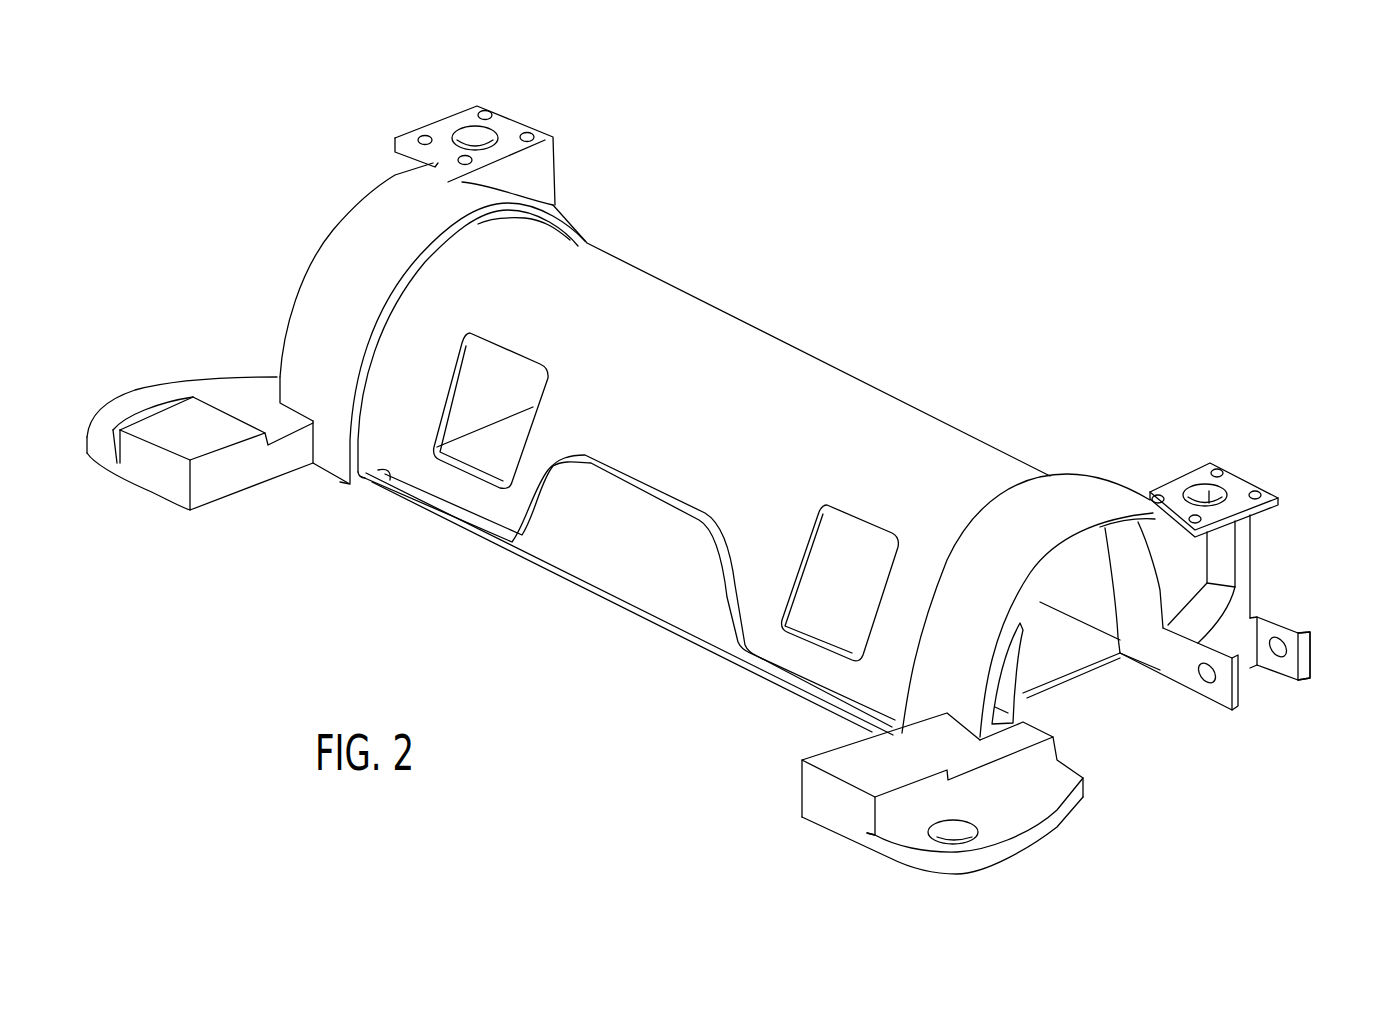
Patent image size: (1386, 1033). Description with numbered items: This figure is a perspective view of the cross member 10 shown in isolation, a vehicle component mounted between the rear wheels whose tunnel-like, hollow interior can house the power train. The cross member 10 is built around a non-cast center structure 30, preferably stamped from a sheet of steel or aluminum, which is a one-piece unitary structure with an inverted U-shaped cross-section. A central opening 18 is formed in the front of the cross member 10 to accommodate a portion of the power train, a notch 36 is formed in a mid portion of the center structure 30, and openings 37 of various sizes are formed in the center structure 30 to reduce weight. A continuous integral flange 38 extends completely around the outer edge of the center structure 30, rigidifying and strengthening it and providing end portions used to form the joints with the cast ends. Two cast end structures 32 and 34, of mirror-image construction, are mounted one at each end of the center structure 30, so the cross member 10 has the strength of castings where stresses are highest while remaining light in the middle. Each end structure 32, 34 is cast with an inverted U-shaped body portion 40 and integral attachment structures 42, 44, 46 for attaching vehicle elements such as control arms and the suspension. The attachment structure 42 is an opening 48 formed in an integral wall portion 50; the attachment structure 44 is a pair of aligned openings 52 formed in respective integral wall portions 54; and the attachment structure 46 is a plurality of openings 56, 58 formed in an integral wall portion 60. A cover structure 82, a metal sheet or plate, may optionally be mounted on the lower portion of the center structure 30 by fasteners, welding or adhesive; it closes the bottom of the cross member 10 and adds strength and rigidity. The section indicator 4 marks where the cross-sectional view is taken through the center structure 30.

The section line 4- 4 is at (433, 220).
The cross member 10 is at (889, 346).
The central opening 18 is at (660, 597).
The center structure 30 is at (721, 301).
The end structure 32 is at (1148, 458).
The end structure 34 is at (590, 183).
The notch 36 is at (541, 505).
The openings 37 is at (440, 428).
The flange 38 is at (376, 408).
The body portion 40 is at (383, 197).
The attachment structure 42 is at (993, 832).
The attachment structure 44 is at (1303, 614).
The attachment structure 46 is at (1268, 448).
The opening 48 is at (947, 828).
The wall portion 50 is at (993, 855).
The aligned openings 52 is at (1280, 656).
The wall portions 54 is at (1305, 664).
The openings 56 is at (525, 133).
The opening 58 is at (466, 128).
The wall portion 60 is at (432, 130).
The cover structure 82 is at (582, 587).